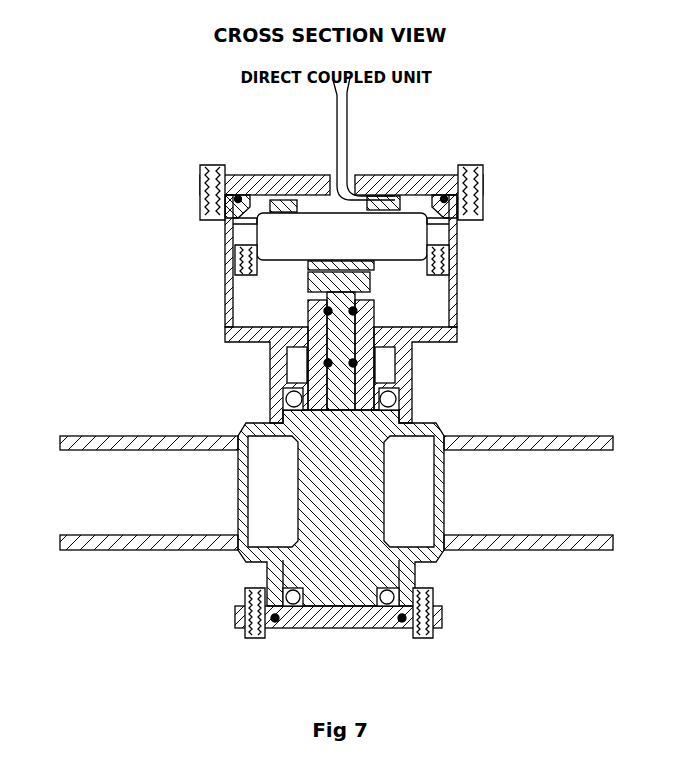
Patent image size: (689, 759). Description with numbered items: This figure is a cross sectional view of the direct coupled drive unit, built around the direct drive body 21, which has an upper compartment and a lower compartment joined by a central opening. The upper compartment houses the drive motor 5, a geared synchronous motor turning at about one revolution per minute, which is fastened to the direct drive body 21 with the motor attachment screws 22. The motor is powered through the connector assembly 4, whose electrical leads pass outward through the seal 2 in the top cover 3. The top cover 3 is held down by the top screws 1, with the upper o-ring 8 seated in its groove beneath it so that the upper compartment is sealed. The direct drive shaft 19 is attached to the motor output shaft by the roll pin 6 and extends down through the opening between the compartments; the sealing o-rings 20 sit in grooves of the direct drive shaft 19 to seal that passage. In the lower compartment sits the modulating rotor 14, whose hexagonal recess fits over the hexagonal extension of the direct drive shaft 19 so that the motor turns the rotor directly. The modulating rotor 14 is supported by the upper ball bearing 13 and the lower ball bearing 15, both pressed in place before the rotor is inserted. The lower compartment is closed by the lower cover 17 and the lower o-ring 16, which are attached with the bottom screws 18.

The top screws 1 is at (483, 172).
The seal 2 is at (360, 162).
The top cover 3 is at (287, 174).
The connector assembly 4 is at (243, 208).
The drive motor 5 is at (455, 240).
The roll pin 6 is at (372, 267).
The upper o-ring 8 is at (236, 199).
The upper ball bearing 13 is at (292, 401).
The modulating rotor 14 is at (385, 500).
The lower ball bearing 15 is at (288, 598).
The lower o-ring 16 is at (403, 622).
The lower cover 17 is at (333, 617).
The bottom screws 18 is at (436, 624).
The direct drive shaft 19 is at (312, 283).
The sealing o-rings 20 is at (328, 363).
The direct drive body 21 is at (460, 330).
The motor attachment screws 22 is at (235, 258).